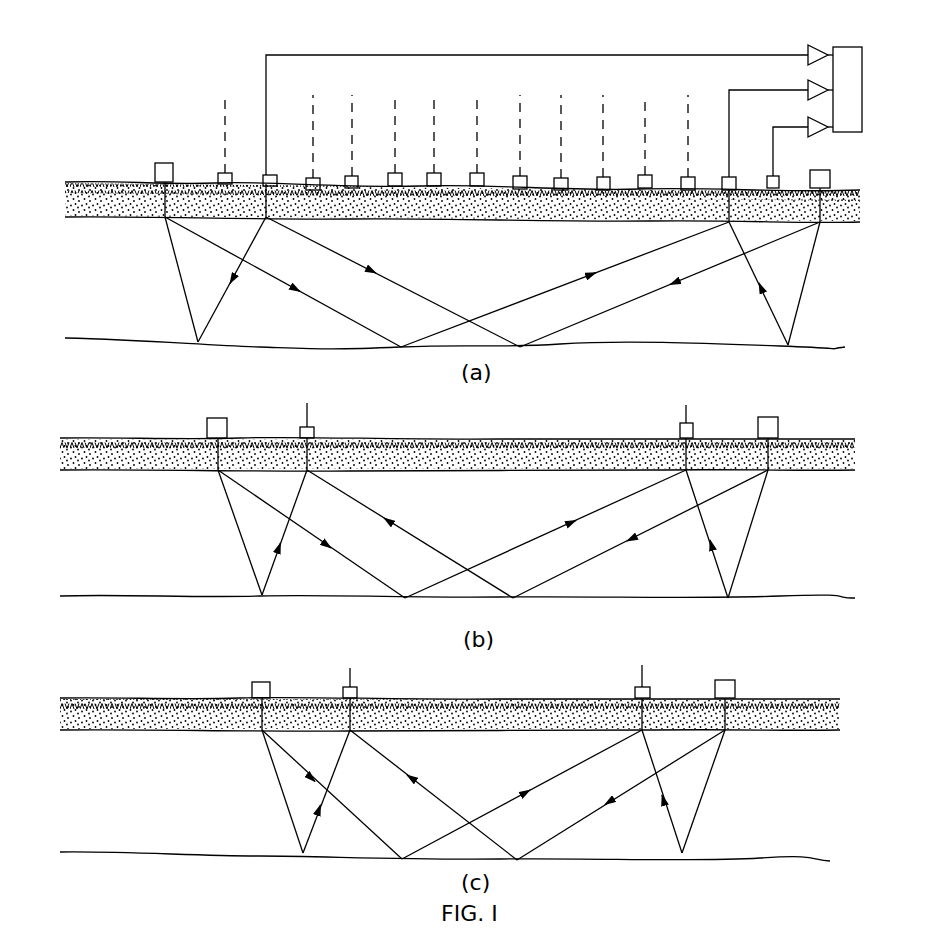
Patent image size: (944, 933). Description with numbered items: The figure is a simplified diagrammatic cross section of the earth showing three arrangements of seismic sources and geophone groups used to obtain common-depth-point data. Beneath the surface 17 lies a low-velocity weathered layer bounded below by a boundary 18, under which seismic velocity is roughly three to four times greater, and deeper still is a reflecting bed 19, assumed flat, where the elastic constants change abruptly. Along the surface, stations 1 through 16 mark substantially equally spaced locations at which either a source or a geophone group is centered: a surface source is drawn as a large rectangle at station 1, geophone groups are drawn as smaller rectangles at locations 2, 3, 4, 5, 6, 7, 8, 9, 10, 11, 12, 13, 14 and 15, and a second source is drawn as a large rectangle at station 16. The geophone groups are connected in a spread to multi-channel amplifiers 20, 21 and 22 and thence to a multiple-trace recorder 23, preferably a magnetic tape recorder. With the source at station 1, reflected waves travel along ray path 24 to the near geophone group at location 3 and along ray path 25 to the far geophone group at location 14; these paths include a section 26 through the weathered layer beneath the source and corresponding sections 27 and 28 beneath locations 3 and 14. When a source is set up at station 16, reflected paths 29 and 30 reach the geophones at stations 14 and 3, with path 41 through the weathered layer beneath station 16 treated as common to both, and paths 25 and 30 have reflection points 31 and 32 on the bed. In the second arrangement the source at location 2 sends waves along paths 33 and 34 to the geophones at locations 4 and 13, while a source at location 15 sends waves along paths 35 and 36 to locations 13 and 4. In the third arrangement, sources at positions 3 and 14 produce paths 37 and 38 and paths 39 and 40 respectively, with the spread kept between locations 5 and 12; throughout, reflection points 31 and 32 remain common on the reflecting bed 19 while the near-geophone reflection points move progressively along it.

The station 1 is at (828, 178).
The geophone group location 2 is at (776, 301).
The geophone group location 3 is at (733, 431).
The geophone group location 4 is at (695, 266).
The geophone group location 5 is at (651, 396).
The geophone group location 6 is at (611, 142).
The geophone group location 7 is at (568, 142).
The geophone group location 8 is at (527, 142).
The geophone group location 9 is at (484, 141).
The geophone group location 10 is at (447, 141).
The geophone group location 11 is at (408, 141).
The geophone group location 12 is at (364, 396).
The geophone group location 13 is at (323, 266).
The geophone group location 14 is at (278, 431).
The geophone group location 15 is at (233, 266).
The station 16 is at (178, 173).
The surface 17 is at (105, 181).
The boundary 18 is at (400, 221).
The reflecting bed 19 is at (256, 345).
The amplifier 20 is at (814, 130).
The amplifier 21 is at (806, 87).
The amplifier 22 is at (806, 52).
The multiple-trace recorder 23 is at (848, 47).
The seismic ray path 24 is at (800, 318).
The seismic ray path 25 is at (688, 281).
The path section 26 is at (823, 208).
The path 27 is at (727, 204).
The path 28 is at (264, 203).
The wave path 29 is at (180, 281).
The wave path 30 is at (318, 303).
The reflection point 31 is at (520, 346).
The reflection point 32 is at (401, 346).
The wave path 33 is at (745, 563).
The wave path 34 is at (613, 548).
The wave path 35 is at (240, 538).
The wave path 36 is at (313, 537).
The wave path 37 is at (710, 778).
The wave path 38 is at (586, 818).
The wave path 39 is at (285, 801).
The wave path 40 is at (344, 812).
The path 41 is at (163, 201).